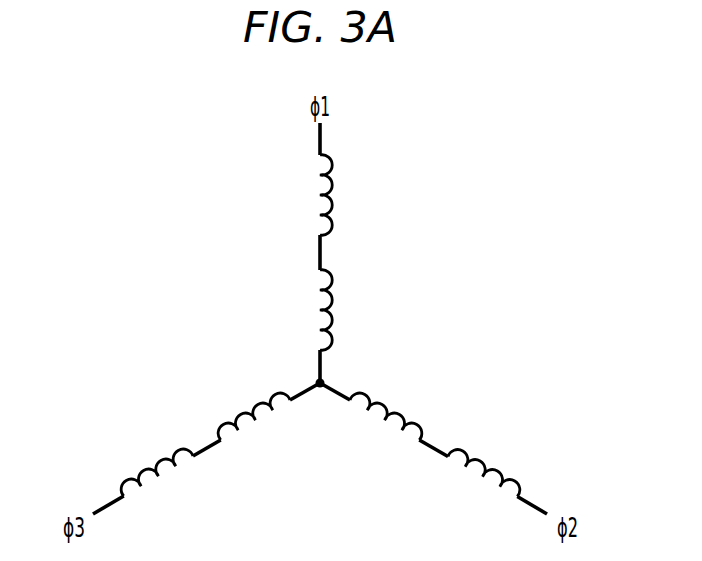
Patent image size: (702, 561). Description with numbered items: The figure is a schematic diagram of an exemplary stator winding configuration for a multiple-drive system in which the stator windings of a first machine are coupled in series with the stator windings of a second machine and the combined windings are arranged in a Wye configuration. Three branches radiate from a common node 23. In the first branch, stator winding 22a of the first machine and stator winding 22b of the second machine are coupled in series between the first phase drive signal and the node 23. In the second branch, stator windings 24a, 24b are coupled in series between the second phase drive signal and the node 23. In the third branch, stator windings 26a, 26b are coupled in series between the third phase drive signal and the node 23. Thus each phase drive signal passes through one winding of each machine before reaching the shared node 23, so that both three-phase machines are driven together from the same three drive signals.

The stator winding 22a is at (331, 186).
The stator winding 22b is at (331, 300).
The node 23 is at (320, 389).
The stator winding 24a is at (497, 473).
The stator winding 24b is at (402, 417).
The stator winding 26a is at (140, 473).
The stator winding 26b is at (238, 418).